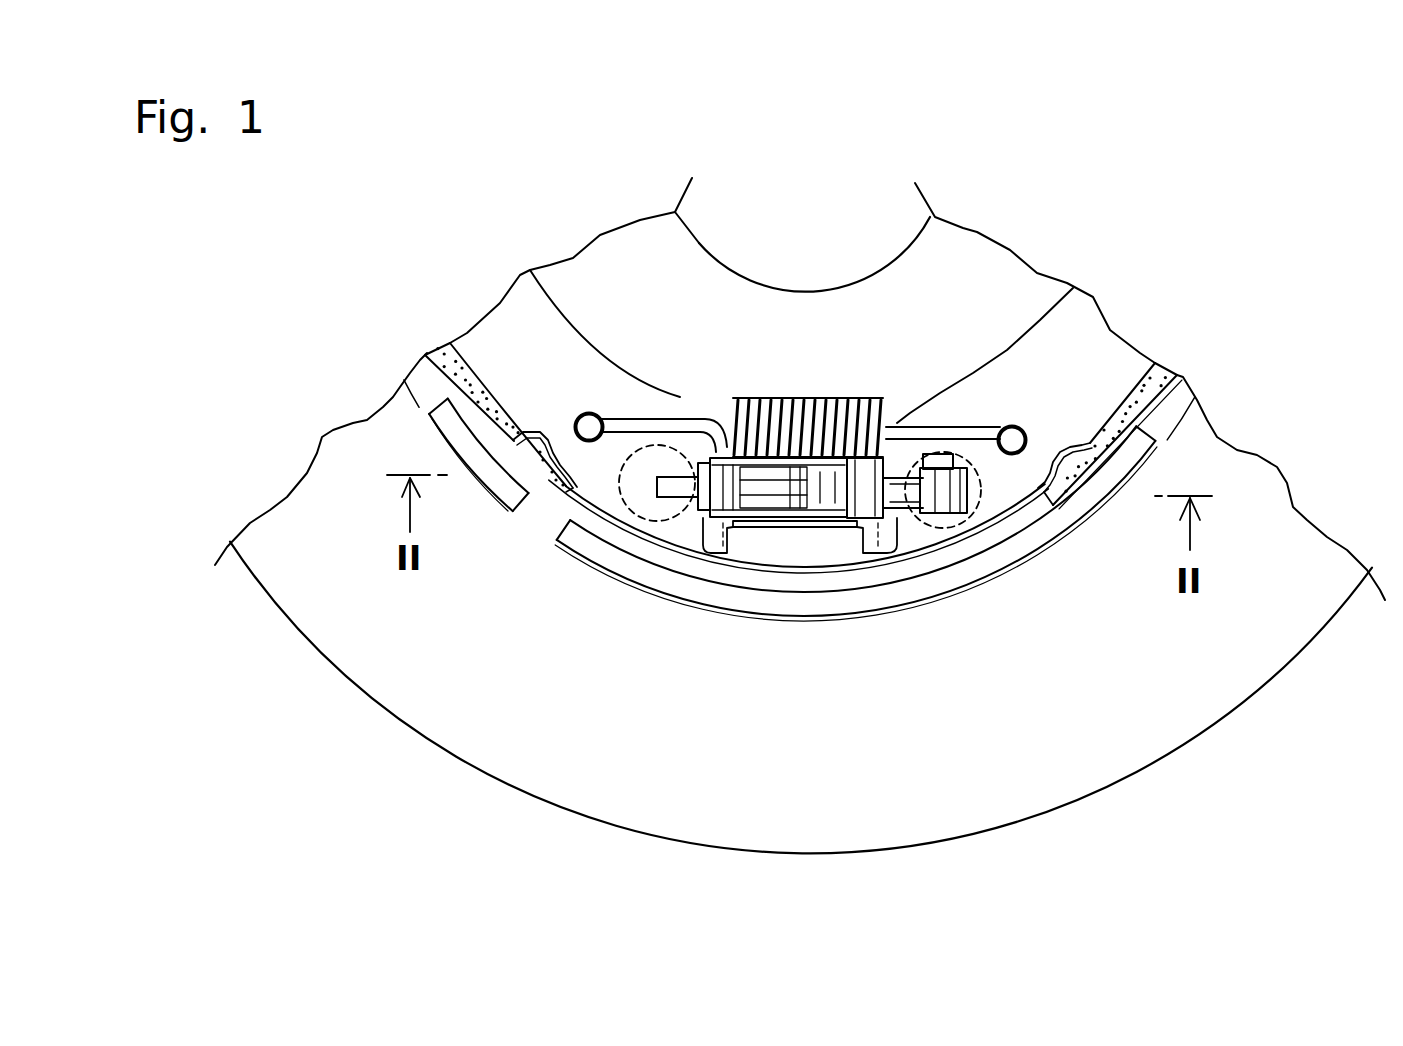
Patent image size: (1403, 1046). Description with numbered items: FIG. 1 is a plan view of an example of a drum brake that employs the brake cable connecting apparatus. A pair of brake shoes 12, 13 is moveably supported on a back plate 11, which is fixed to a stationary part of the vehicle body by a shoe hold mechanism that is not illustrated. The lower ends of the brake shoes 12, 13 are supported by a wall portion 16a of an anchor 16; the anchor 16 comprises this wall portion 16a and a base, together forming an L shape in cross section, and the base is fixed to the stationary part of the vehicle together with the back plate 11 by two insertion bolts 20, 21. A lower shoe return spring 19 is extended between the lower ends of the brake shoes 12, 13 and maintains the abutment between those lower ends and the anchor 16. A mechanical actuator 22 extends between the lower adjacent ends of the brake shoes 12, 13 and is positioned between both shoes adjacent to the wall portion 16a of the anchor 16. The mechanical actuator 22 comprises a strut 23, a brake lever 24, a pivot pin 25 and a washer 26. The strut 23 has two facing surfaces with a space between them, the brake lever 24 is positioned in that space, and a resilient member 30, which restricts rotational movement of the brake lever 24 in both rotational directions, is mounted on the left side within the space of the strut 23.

The back plate 11 is at (800, 515).
The brake shoe 12 is at (377, 500).
The brake shoe 13 is at (1194, 436).
The anchor 16 is at (852, 666).
The wall portion 16a is at (856, 681).
The lower shoe return spring 19 is at (730, 331).
The insertion bolt 20 is at (610, 674).
The insertion bolt 21 is at (1018, 529).
The mechanical actuator 22 is at (800, 713).
The strut 23 is at (909, 305).
The brake lever 24 is at (957, 572).
The pivot pin 25 is at (900, 337).
The washer 26 is at (1002, 362).
The resilient member 30 is at (773, 337).